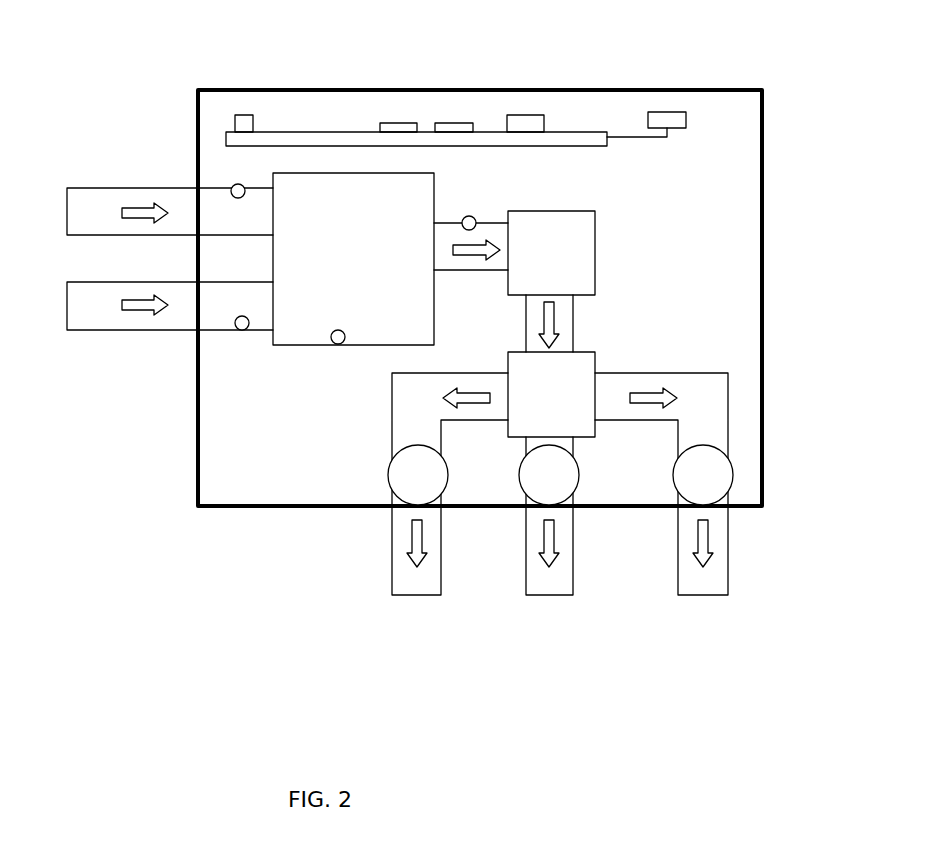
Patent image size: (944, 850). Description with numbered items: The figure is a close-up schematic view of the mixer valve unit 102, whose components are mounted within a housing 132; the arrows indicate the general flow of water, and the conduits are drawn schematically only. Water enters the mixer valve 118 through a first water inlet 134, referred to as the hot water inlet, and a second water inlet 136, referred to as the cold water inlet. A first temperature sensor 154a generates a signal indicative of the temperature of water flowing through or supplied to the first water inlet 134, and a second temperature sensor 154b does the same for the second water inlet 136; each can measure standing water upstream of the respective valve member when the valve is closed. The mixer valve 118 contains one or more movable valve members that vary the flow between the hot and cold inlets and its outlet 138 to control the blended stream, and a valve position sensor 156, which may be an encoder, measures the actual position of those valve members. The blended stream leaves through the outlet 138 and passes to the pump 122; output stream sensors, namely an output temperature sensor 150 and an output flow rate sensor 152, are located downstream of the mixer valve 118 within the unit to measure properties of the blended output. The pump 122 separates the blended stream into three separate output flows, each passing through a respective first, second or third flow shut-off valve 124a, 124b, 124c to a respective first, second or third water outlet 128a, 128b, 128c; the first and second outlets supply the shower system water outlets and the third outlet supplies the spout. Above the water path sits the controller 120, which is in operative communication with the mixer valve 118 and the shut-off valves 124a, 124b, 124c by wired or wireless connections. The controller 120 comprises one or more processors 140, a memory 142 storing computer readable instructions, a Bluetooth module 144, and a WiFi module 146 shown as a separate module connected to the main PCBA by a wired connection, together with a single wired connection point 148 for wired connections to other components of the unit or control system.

The mixer valve unit 102 is at (96, 131).
The mixer valve 118 is at (319, 284).
The controller 120 is at (342, 108).
The pump 122 is at (535, 409).
The first flow shut-off valve 124a is at (397, 486).
The second flow shut-off valve 124b is at (528, 486).
The third flow shut-off valve 124c is at (683, 486).
The first water outlet 128a is at (413, 597).
The second water outlet 128b is at (548, 597).
The third water outlet 128c is at (705, 597).
The housing 132 is at (762, 200).
The first water inlet 134 is at (157, 187).
The second water inlet 136 is at (113, 331).
The outlet 138 is at (465, 272).
The processor 140 is at (403, 122).
The memory 142 is at (463, 122).
The Bluetooth module 144 is at (532, 114).
The WiFi module 146 is at (678, 111).
The wired connection point 148 is at (247, 115).
The output temperature sensor 150 is at (471, 216).
The output flow rate sensor 152 is at (536, 272).
The first temperature sensor 154a is at (233, 185).
The second temperature sensor 154b is at (239, 330).
The valve position sensor 156 is at (334, 343).